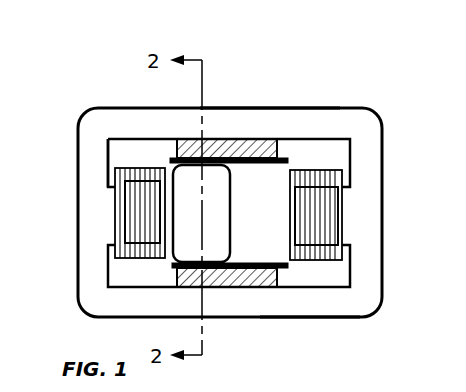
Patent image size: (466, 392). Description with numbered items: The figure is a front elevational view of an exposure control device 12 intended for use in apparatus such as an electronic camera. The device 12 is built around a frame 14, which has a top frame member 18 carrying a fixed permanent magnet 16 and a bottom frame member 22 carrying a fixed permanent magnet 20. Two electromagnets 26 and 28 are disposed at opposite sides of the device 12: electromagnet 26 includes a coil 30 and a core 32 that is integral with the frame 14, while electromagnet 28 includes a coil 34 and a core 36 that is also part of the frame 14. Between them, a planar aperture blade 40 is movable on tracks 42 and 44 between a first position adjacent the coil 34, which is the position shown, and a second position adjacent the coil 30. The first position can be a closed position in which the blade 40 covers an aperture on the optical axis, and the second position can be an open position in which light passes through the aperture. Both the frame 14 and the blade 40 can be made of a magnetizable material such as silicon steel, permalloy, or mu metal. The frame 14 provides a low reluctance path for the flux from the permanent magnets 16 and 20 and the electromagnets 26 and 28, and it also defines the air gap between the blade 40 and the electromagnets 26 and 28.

The exposure control device 12 is at (364, 56).
The frame 14 is at (366, 94).
The permanent magnet 16 is at (213, 142).
The top frame member 18 is at (296, 108).
The permanent magnet 20 is at (265, 282).
The bottom frame member 22 is at (350, 318).
The electromagnet 26 is at (338, 150).
The electromagnet 28 is at (146, 146).
The coil 30 is at (342, 200).
The core 32 is at (327, 244).
The coil 34 is at (115, 206).
The core 36 is at (113, 226).
The aperture blade 40 is at (232, 218).
The track 42 is at (258, 164).
The track 44 is at (248, 262).